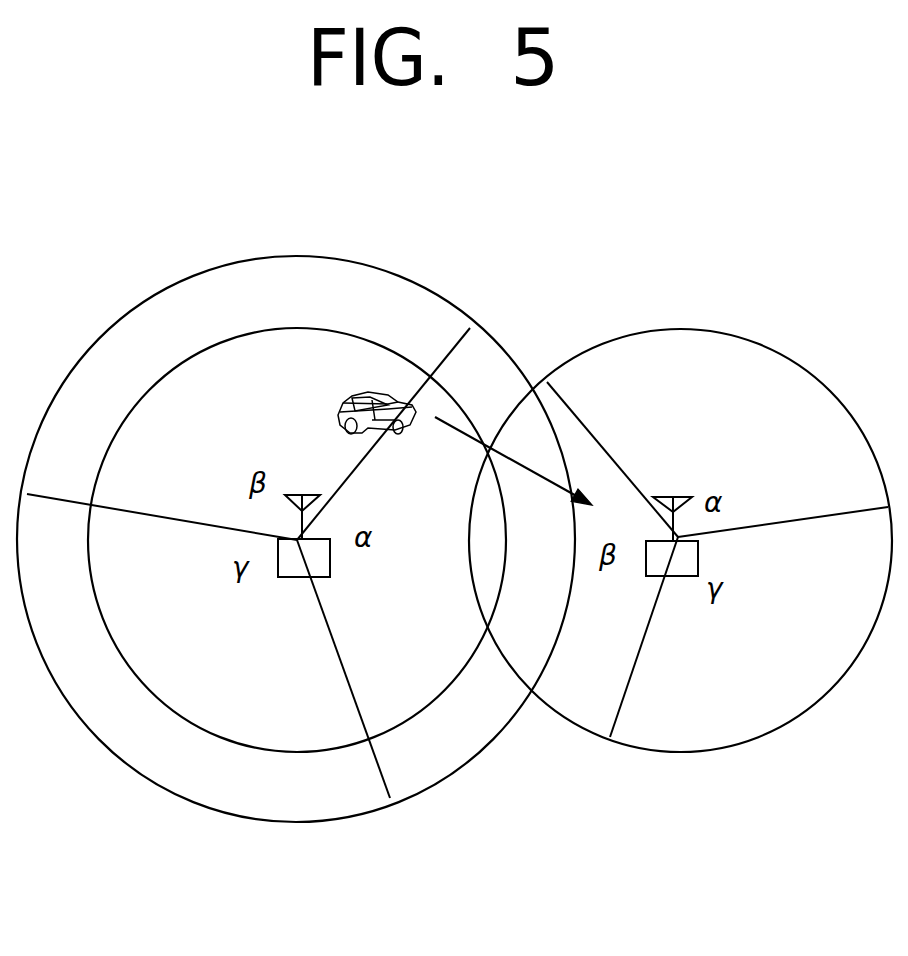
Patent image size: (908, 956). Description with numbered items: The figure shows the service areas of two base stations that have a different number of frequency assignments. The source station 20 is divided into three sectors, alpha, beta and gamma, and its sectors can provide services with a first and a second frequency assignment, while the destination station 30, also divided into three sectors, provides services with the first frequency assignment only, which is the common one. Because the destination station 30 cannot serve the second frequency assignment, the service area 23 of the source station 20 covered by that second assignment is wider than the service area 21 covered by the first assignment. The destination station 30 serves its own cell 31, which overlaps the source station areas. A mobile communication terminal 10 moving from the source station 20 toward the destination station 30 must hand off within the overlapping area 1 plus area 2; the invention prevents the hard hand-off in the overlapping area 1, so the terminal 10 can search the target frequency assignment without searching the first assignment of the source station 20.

The overlapping area 1 is at (487, 557).
The overlapping area 2 is at (522, 628).
The mobile communication terminal 10 is at (388, 433).
The source station 20 is at (302, 578).
The service area 21 is at (275, 328).
The service area 23 is at (277, 255).
The destination station 30 is at (673, 577).
The cell 31 is at (678, 328).